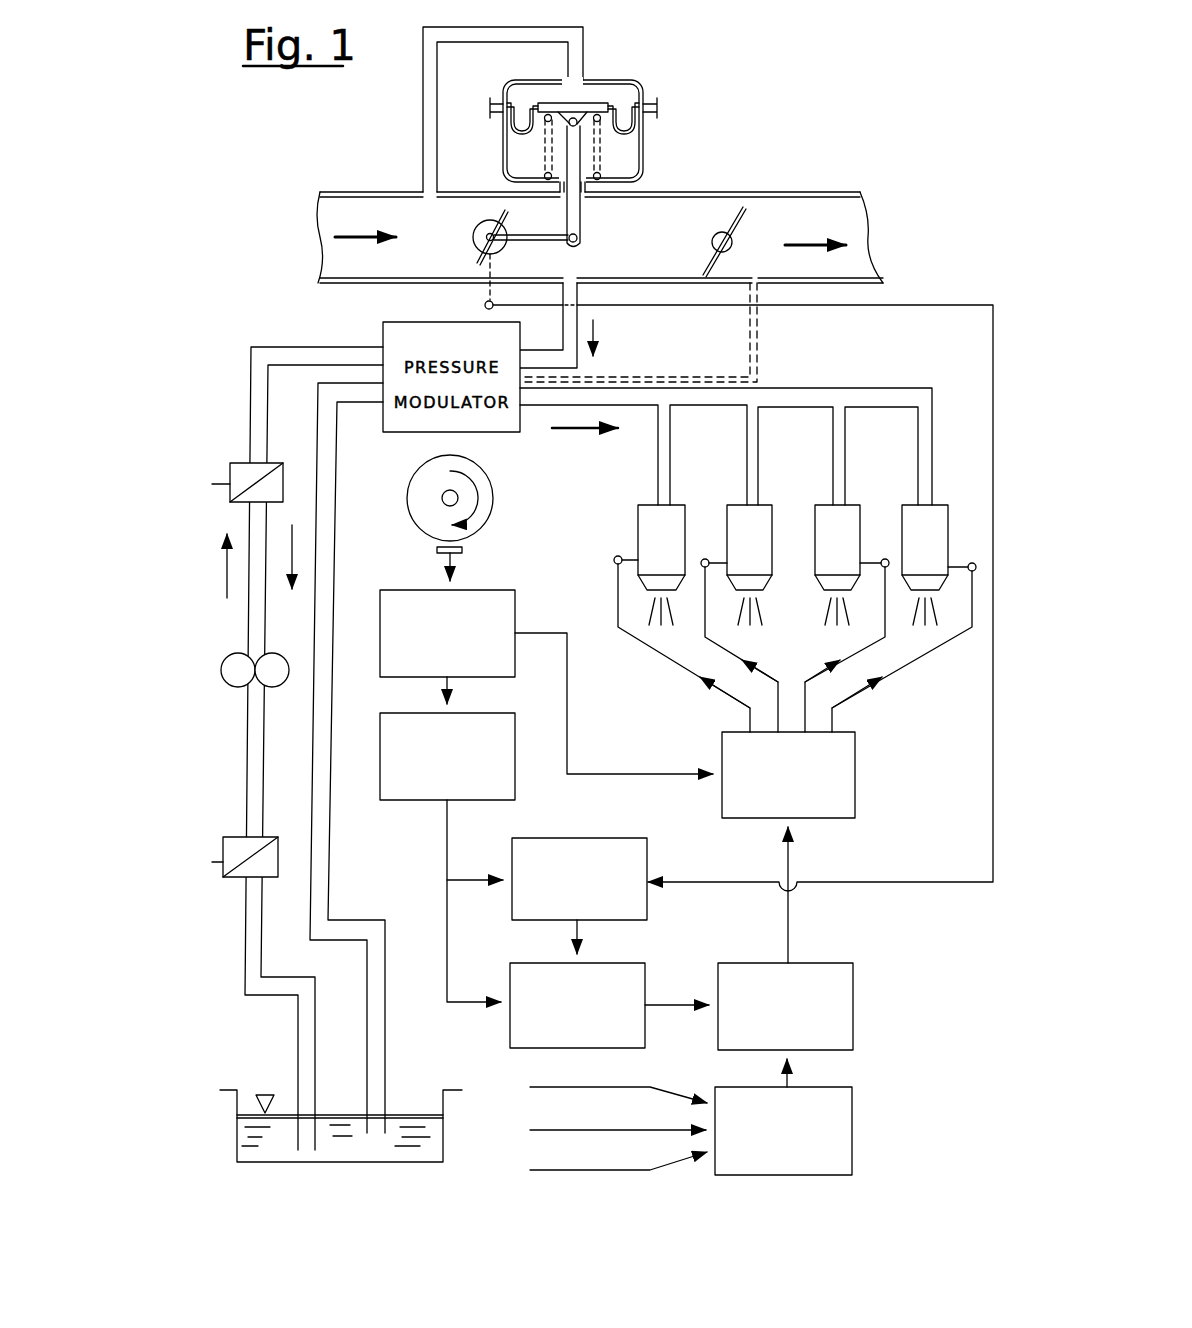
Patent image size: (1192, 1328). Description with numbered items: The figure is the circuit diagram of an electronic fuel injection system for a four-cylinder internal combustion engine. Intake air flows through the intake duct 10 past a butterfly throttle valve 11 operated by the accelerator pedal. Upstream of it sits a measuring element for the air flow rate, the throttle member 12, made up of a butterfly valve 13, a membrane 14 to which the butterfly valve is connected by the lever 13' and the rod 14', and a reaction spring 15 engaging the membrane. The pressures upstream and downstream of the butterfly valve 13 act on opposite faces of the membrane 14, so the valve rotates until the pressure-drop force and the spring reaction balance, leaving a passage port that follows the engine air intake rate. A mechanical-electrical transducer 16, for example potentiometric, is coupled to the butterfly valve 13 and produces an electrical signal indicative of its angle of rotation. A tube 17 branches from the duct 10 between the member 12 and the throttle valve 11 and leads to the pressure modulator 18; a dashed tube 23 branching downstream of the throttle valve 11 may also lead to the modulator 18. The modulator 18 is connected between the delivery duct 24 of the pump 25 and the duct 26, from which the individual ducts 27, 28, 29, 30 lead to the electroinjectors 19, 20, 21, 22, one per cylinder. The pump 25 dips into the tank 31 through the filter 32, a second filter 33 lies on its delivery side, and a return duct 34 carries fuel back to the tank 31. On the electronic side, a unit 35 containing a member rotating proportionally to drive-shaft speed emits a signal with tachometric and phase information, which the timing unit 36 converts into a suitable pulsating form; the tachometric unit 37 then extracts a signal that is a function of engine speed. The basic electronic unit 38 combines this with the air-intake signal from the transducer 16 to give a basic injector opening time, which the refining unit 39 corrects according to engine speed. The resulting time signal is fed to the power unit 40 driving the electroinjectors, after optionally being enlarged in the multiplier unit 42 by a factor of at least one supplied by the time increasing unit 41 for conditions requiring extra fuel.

The intake duct 10 is at (365, 195).
The butterfly throttle valve 11 is at (705, 265).
The throttle member 12 is at (492, 184).
The butterfly valve 13 is at (467, 239).
The lever 13' is at (531, 252).
The membrane 14 is at (590, 134).
The rod 14' is at (598, 179).
The reaction spring 15 is at (548, 148).
The mechanical-electrical transducer 16 is at (478, 230).
The tube 17 is at (549, 358).
The pressure modulator 18 is at (433, 345).
The electroinjector 19 is at (645, 520).
The electroinjector 20 is at (738, 523).
The electroinjector 21 is at (825, 523).
The electroinjector 22 is at (910, 524).
The tube 23 is at (757, 350).
The delivery duct 24 is at (328, 355).
The pump 25 is at (235, 672).
The duct 26 is at (551, 394).
The individual duct 27 is at (668, 425).
The individual duct 28 is at (756, 425).
The individual duct 29 is at (843, 428).
The individual duct 30 is at (930, 428).
The tank 31 is at (389, 1163).
The filter 32 is at (235, 840).
The second filter 33 is at (240, 468).
The return duct 34 is at (367, 393).
The unit 35 is at (405, 500).
The timing unit 36 is at (412, 605).
The tachometric unit 37 is at (425, 783).
The basic electronic unit 38 is at (615, 852).
The refining unit 39 is at (525, 980).
The power unit 40 is at (845, 758).
The time increasing unit 41 is at (838, 1118).
The multiplier unit 42 is at (845, 990).